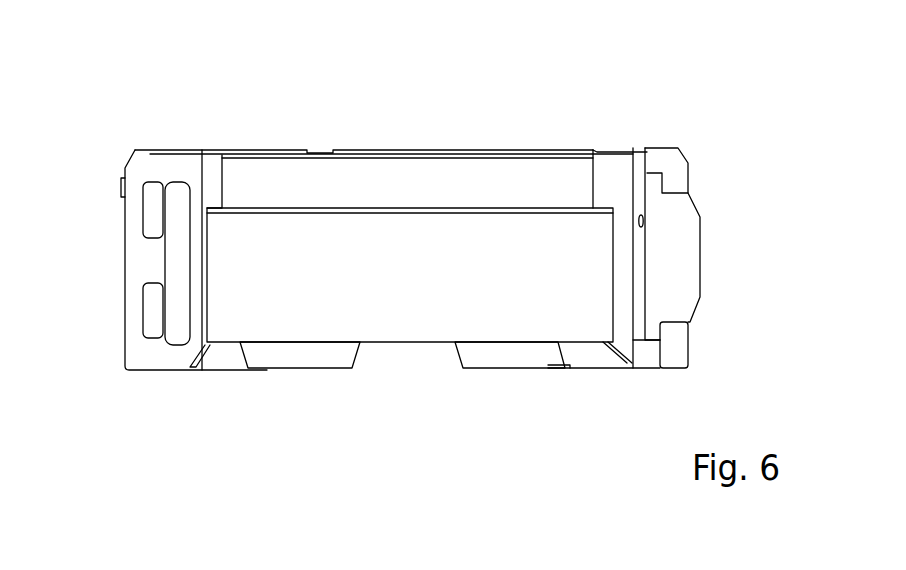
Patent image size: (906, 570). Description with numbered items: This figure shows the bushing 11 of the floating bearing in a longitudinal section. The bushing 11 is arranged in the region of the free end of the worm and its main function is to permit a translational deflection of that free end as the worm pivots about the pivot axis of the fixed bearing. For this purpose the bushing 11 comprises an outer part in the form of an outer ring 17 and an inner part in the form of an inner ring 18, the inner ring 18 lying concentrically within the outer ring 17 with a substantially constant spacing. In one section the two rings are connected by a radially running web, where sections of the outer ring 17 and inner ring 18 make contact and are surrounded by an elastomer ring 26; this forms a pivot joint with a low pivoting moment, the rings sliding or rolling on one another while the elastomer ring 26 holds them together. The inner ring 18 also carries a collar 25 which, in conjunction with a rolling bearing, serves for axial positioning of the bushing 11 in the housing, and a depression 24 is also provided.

The bushing 11 is at (707, 118).
The outer ring 17 is at (150, 202).
The inner ring 18 is at (175, 250).
The depression 24 is at (676, 247).
The collar 25 is at (212, 173).
The elastomer ring 26 is at (152, 272).